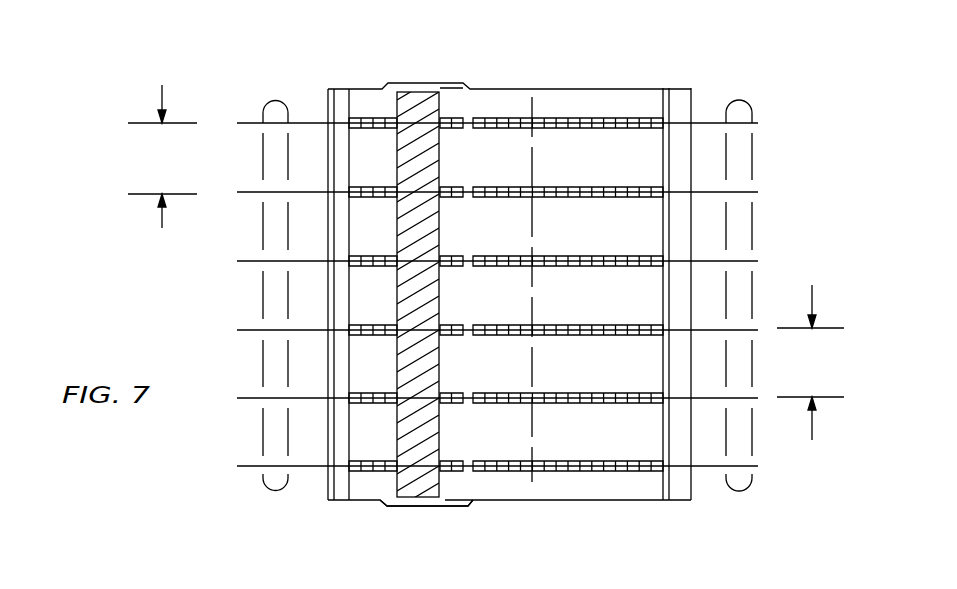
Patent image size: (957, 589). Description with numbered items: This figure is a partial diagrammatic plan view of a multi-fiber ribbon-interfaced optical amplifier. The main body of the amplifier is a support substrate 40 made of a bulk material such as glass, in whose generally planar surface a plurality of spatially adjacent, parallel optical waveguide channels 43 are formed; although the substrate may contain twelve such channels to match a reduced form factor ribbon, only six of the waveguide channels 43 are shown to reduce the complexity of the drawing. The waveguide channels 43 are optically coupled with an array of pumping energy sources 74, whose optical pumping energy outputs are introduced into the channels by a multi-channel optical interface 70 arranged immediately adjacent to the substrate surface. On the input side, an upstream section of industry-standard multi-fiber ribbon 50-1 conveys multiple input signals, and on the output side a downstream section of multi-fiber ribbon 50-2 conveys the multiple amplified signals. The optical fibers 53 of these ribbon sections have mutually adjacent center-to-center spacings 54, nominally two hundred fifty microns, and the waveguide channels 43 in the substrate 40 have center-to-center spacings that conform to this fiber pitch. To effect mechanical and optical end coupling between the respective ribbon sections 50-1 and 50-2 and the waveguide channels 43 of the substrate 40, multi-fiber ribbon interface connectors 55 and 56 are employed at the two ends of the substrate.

The support substrate 40 is at (636, 88).
The optical waveguide channels 43 is at (585, 117).
The optical fibers 53 is at (244, 116).
The center-to-center spacings 54 is at (155, 155).
The multi-fiber ribbon interface connector 55 is at (328, 89).
The multi-fiber ribbon interface connector 56 is at (690, 88).
The multi-channel optical interface 70 is at (452, 507).
The pumping energy sources 74 is at (423, 84).
The upstream section of multi-fiber ribbon 50-1 is at (277, 491).
The downstream section of multi-fiber ribbon 50-2 is at (755, 478).